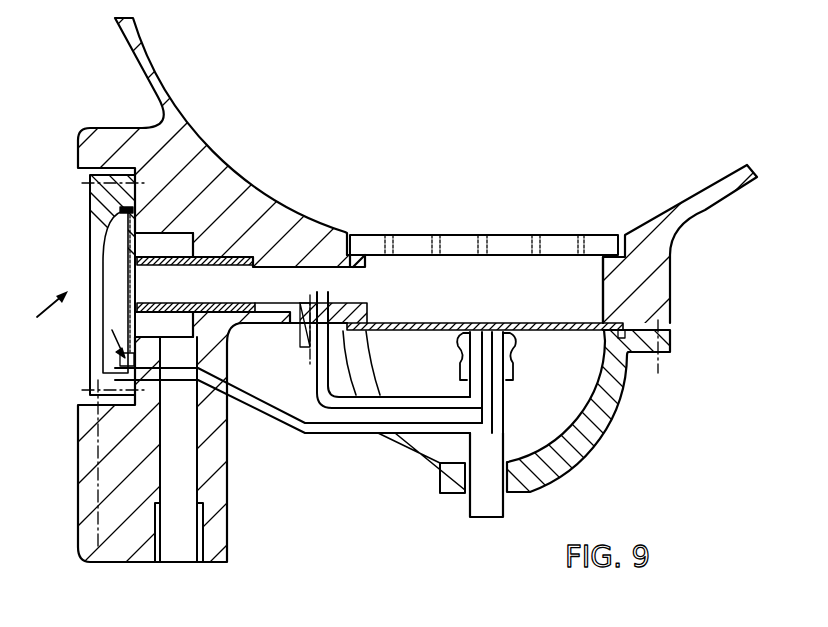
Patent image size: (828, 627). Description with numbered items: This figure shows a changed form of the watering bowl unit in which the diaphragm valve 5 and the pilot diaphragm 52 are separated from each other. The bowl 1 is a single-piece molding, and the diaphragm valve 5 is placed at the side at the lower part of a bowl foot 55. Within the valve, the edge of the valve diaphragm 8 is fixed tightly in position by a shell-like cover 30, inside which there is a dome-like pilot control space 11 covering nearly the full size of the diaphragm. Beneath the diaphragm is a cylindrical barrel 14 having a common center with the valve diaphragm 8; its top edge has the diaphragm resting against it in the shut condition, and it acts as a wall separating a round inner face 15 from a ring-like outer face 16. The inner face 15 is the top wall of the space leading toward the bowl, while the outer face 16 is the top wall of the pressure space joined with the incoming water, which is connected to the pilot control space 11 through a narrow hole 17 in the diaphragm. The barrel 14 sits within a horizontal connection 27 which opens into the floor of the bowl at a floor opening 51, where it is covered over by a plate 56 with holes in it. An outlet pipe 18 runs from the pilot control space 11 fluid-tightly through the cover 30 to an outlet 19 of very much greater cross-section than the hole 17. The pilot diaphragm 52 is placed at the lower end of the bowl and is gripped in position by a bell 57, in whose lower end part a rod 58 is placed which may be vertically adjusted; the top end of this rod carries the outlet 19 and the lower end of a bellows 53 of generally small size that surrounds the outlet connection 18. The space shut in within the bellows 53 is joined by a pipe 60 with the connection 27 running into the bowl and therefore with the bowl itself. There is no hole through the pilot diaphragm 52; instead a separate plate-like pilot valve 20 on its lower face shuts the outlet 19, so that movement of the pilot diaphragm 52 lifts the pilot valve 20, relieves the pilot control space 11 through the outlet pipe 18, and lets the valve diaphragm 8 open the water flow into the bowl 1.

The bowl 1 is at (150, 50).
The diaphragm valve 5 is at (51, 313).
The valve diaphragm 8 is at (135, 258).
The pilot control space 11 is at (121, 290).
The cylindrical barrel 14 is at (160, 303).
The round inner face 15 is at (162, 260).
The ring-like outer face 16 is at (138, 248).
The narrow hole 17 is at (137, 325).
The outlet pipe 18 is at (340, 430).
The outlet 19 is at (466, 343).
The pilot valve 20 is at (487, 327).
The connection 27 is at (280, 297).
The cover 30 is at (88, 255).
The floor opening 51 is at (603, 287).
The pilot diaphragm 52 is at (440, 322).
The bellows 53 is at (513, 350).
The bowl foot 55 is at (120, 562).
The plate with holes 56 is at (515, 245).
The bell 57 is at (590, 431).
The rod 58 is at (498, 443).
The pipe 60 is at (317, 388).